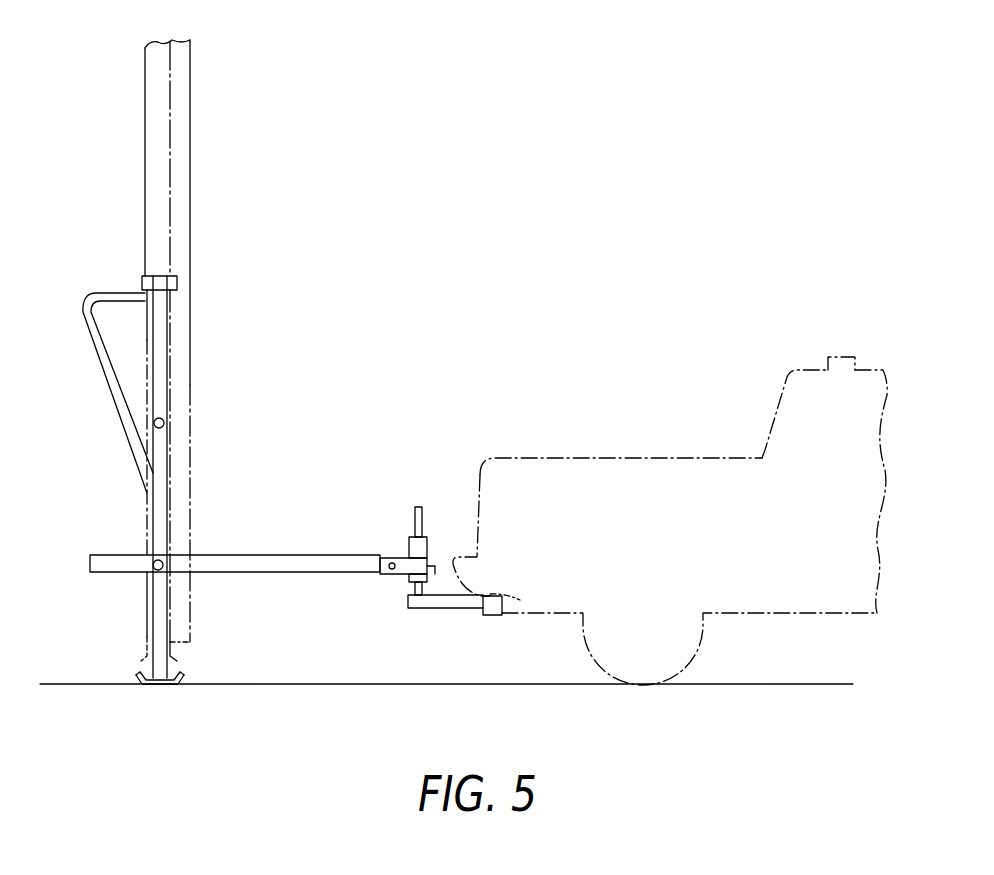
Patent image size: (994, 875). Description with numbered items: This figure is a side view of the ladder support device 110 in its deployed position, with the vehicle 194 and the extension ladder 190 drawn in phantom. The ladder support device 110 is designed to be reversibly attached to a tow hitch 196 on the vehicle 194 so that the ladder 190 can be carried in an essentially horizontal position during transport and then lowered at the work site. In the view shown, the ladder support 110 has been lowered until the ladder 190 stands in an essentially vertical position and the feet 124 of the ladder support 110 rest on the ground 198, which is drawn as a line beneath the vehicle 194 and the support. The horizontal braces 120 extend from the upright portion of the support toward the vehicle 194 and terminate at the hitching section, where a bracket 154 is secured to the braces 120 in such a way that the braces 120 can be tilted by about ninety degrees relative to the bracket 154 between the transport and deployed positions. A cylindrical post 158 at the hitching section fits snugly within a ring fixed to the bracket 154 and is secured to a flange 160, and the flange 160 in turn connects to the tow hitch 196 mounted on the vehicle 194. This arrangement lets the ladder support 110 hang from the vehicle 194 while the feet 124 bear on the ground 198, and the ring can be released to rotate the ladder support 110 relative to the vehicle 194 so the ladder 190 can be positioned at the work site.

The ladder support device 110 is at (128, 507).
The horizontal brace 120 is at (303, 560).
The foot 124 is at (147, 684).
The bracket 154 is at (402, 568).
The cylindrical post 158 is at (412, 518).
The flange 160 is at (437, 600).
The extension ladder 190 is at (226, 216).
The vehicle 194 is at (727, 427).
The tow hitch 196 is at (500, 608).
The ground 198 is at (362, 684).